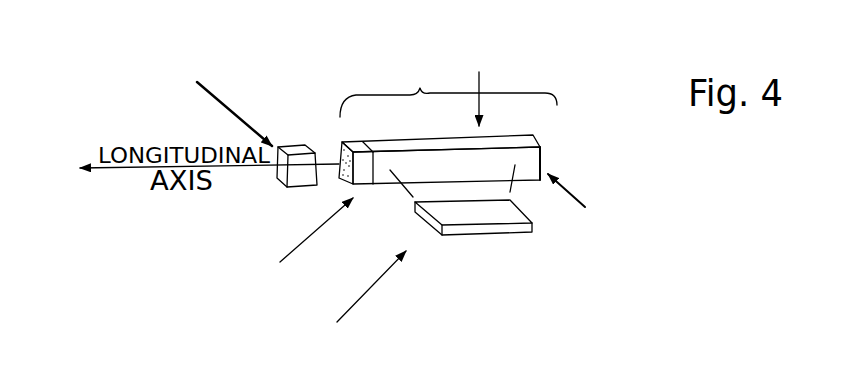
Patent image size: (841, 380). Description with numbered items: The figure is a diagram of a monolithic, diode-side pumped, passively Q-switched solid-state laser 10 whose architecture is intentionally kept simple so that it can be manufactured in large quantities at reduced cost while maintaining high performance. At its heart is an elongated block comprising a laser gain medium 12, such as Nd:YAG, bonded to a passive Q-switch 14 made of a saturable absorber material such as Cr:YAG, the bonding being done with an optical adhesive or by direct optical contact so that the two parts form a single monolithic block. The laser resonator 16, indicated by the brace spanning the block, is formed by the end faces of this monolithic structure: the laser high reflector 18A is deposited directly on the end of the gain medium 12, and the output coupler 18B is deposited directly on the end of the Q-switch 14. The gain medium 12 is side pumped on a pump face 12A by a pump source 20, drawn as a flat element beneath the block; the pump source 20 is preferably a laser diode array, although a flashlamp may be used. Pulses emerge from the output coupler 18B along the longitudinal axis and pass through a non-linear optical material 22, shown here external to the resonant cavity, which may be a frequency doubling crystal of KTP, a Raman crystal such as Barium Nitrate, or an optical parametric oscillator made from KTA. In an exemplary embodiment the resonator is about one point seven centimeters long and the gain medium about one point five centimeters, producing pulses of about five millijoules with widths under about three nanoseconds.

The solid-state laser 10 is at (626, 121).
The laser gain medium 12 is at (515, 133).
The pump face 12A is at (452, 175).
The passive Q-switch 14 is at (375, 187).
The laser resonator 16 is at (448, 83).
The laser high reflector 18A is at (543, 160).
The output coupler 18B is at (327, 137).
The pump source 20 is at (465, 234).
The non-linear optical material 22 is at (300, 188).